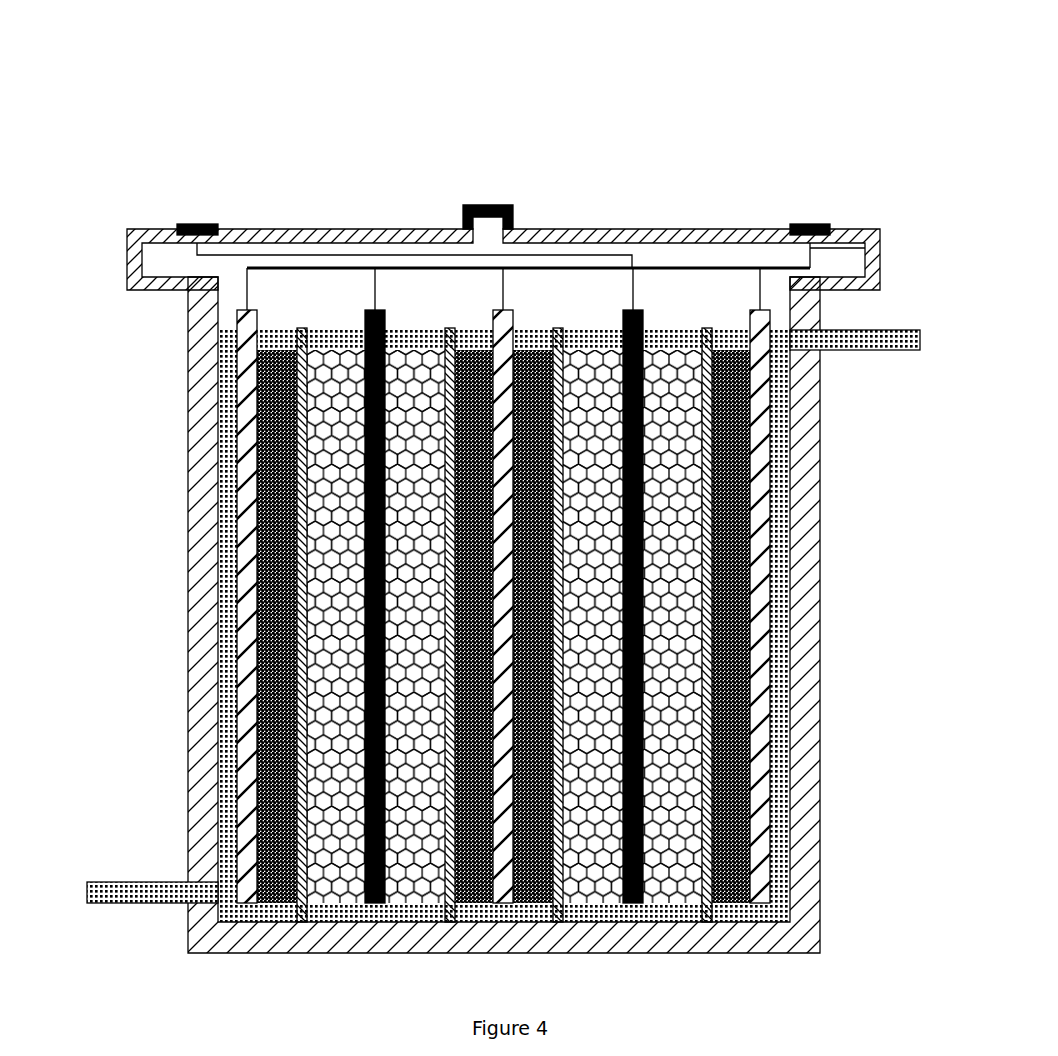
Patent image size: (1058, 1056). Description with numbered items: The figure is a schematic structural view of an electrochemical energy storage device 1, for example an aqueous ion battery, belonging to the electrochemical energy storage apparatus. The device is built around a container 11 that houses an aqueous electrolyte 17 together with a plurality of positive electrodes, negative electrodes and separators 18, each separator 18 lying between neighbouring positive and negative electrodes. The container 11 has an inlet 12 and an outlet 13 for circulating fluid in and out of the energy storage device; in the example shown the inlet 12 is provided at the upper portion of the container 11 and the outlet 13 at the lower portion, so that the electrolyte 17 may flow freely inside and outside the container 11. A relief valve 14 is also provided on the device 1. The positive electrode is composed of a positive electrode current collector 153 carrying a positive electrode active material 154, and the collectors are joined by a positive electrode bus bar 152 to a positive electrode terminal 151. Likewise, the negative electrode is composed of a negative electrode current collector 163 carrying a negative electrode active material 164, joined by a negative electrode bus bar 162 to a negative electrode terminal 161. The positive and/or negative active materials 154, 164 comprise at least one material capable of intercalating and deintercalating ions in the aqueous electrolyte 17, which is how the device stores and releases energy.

The electrochemical energy storage device 1 is at (727, 144).
The container 11 is at (868, 252).
The inlet 12 is at (800, 347).
The outlet 13 is at (185, 893).
The relief valve 14 is at (470, 205).
The positive electrode terminal 151 is at (797, 222).
The positive electrode bus bar 152 is at (700, 267).
The positive electrode current collector 153 is at (233, 360).
The positive electrode active material 154 is at (257, 483).
The negative electrode terminal 161 is at (197, 223).
The negative electrode bus bar 162 is at (398, 257).
The negative electrode current collector 163 is at (363, 687).
The negative electrode active material 164 is at (317, 607).
The aqueous electrolyte 17 is at (217, 418).
The separator 18 is at (294, 547).